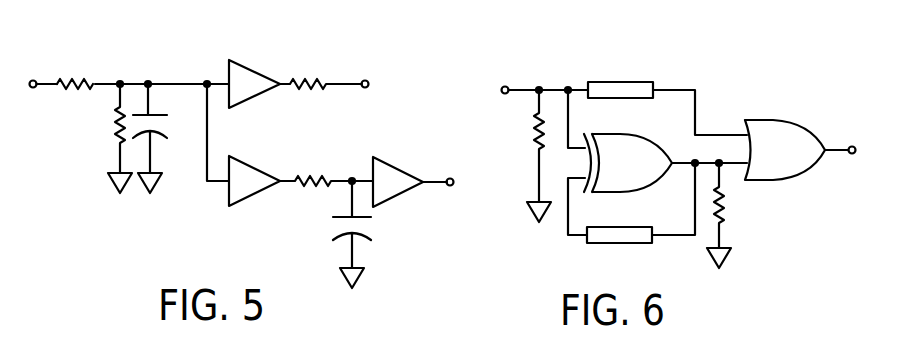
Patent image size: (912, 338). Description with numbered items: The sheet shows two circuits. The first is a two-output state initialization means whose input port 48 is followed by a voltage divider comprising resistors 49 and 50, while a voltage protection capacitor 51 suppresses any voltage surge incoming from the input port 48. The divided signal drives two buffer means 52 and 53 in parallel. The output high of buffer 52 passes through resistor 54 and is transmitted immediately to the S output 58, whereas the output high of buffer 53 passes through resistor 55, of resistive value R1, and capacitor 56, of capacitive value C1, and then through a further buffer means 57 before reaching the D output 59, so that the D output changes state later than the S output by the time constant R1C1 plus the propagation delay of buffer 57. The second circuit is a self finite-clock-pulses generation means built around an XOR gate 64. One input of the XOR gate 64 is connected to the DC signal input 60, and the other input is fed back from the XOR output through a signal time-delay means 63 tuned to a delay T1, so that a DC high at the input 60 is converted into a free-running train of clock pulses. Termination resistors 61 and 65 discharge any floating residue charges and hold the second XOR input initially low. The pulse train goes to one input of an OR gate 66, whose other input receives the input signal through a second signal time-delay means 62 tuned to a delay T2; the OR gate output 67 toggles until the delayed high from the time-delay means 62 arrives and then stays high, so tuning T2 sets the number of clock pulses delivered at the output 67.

In FIG. 5, the input port 48 is at (36, 80).
In FIG. 5, the voltage divider resistor 49 is at (76, 81).
In FIG. 5, the voltage divider resistor 50 is at (114, 128).
In FIG. 5, the voltage protection capacitor 51 is at (163, 117).
In FIG. 5, the buffer means 52 is at (252, 102).
In FIG. 5, the buffer means 53 is at (253, 197).
In FIG. 5, the resistor 54 is at (308, 80).
In FIG. 5, the resistor 55 is at (312, 178).
In FIG. 5, the capacitor 56 is at (338, 216).
In FIG. 5, the buffer means 57 is at (403, 165).
In FIG. 5, the S output 58 is at (371, 91).
In FIG. 5, the D output 59 is at (452, 187).
In FIG. 6, the DC signal input 60 is at (500, 94).
In FIG. 6, the termination resistor 61 is at (532, 135).
In FIG. 6, the signal time-delay means 62 is at (627, 83).
In FIG. 6, the signal time-delay means 63 is at (620, 245).
In FIG. 6, the XOR gate 64 is at (640, 192).
In FIG. 6, the termination resistor 65 is at (724, 208).
In FIG. 6, the OR gate 66 is at (792, 122).
In FIG. 6, the output 67 is at (853, 158).